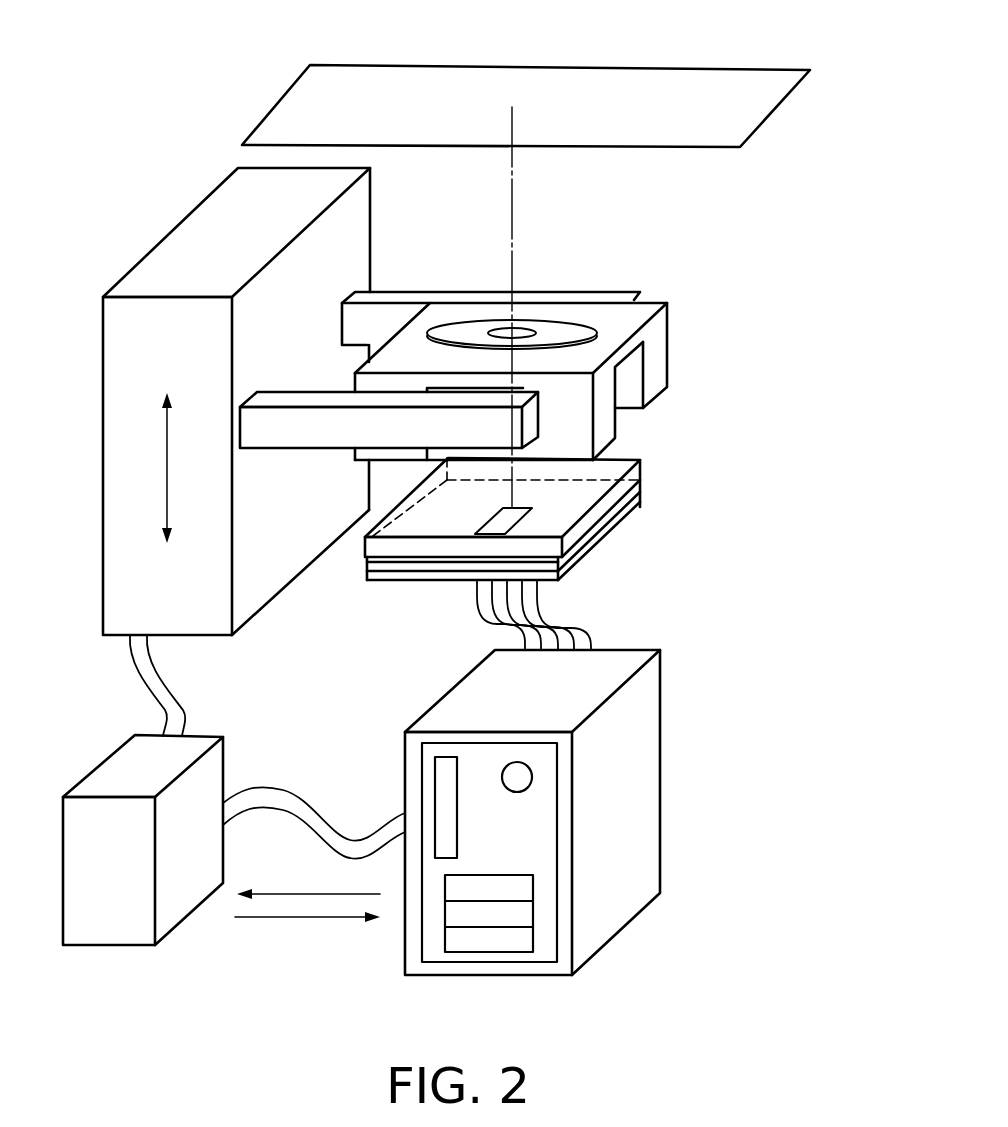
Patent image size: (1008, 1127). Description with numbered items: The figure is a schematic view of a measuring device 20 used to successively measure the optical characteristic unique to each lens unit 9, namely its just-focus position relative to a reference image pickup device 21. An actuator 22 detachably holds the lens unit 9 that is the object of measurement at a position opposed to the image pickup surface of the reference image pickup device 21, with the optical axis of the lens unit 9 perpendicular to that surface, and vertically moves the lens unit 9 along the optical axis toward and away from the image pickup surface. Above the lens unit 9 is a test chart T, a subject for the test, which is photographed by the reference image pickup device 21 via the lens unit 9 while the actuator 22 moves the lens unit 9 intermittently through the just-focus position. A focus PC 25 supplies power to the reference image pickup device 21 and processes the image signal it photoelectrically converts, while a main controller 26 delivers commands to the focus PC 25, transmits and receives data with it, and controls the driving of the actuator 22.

The test chart T is at (357, 80).
The measuring device 20 is at (800, 236).
The actuator 22 is at (167, 267).
The lens unit 9 is at (658, 375).
The reference image pickup device 21 is at (640, 530).
The focus PC 25 is at (612, 910).
The main controller 26 is at (102, 782).